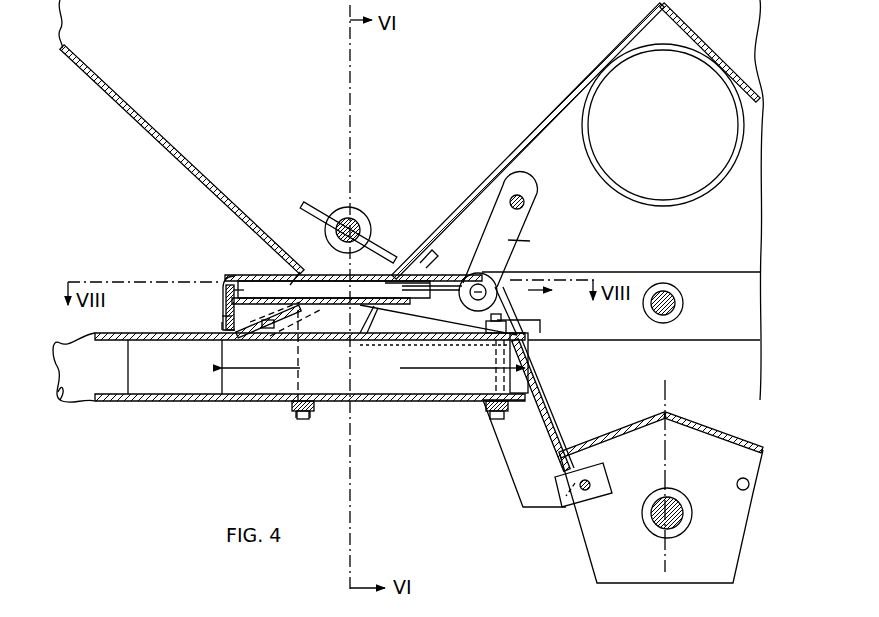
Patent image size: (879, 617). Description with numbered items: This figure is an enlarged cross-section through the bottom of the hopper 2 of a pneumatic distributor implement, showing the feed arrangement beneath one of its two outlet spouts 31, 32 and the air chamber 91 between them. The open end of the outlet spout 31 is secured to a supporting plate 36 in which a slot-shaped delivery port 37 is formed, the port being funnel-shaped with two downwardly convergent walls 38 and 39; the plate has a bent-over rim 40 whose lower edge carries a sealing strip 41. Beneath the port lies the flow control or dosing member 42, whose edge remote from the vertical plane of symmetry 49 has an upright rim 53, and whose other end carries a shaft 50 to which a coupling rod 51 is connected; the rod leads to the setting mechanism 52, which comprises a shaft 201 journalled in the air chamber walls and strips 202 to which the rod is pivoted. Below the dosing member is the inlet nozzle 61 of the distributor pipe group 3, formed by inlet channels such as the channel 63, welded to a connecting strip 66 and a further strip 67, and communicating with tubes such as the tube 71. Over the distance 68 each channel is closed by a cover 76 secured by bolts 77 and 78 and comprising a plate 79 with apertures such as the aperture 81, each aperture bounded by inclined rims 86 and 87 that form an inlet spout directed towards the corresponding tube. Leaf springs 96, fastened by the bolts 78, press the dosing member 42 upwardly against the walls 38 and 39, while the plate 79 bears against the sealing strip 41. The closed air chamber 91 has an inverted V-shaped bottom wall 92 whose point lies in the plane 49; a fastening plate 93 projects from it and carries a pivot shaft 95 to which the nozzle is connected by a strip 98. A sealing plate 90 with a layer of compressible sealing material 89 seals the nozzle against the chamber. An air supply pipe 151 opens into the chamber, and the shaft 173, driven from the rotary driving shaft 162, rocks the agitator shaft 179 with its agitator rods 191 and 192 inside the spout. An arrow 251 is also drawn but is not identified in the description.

The hopper 2 is at (106, 78).
The distributor pipe group 3 is at (118, 330).
The outlet spout 31 is at (252, 73).
The outlet spout 32 is at (742, 27).
The supporting plate 36 is at (246, 276).
The delivery port 37 is at (340, 280).
The downwardly convergent wall 38 is at (300, 270).
The downwardly convergent wall 39 is at (370, 278).
The bent-over rim 40 is at (190, 307).
The sealing strip 41 is at (222, 322).
The flow control member 42 is at (226, 294).
The vertical plane of substantial symmetry 49 is at (668, 398).
The shaft 50 is at (380, 262).
The coupling rod 51 is at (458, 272).
The setting mechanism 52 is at (530, 220).
The upright rim 53 is at (226, 280).
The inlet nozzle 61 is at (172, 407).
The inlet channel 63 is at (416, 394).
The connecting strip 66 is at (314, 420).
The further strip 67 is at (486, 404).
The distance 68 is at (420, 364).
The tube 71 is at (88, 407).
The cover 76 is at (380, 341).
The bolt 77 is at (296, 424).
The bolt 78 is at (530, 358).
The plate 79 is at (428, 364).
The aperture 81 is at (338, 358).
The inclined rim 86 is at (261, 355).
The inclined rim 87 is at (372, 314).
The compressible sealing material 89 is at (540, 400).
The sealing plate 90 is at (544, 442).
The air chamber 91 is at (703, 253).
The bottom wall 92 is at (720, 434).
The fastening plate 93 is at (598, 565).
The pivot shaft 95 is at (590, 490).
The leaf spring 96 is at (440, 332).
The strip 98 is at (520, 320).
The air supply pipe 151 is at (587, 148).
The rotary driving shaft 162 is at (678, 500).
The shaft 173 is at (684, 302).
The agitator shaft 179 is at (360, 213).
The agitator rod 191 is at (325, 207).
The agitator rod 192 is at (370, 238).
The shaft 201 is at (527, 196).
The strip 202 is at (520, 248).
The direction arrow 251 is at (528, 296).